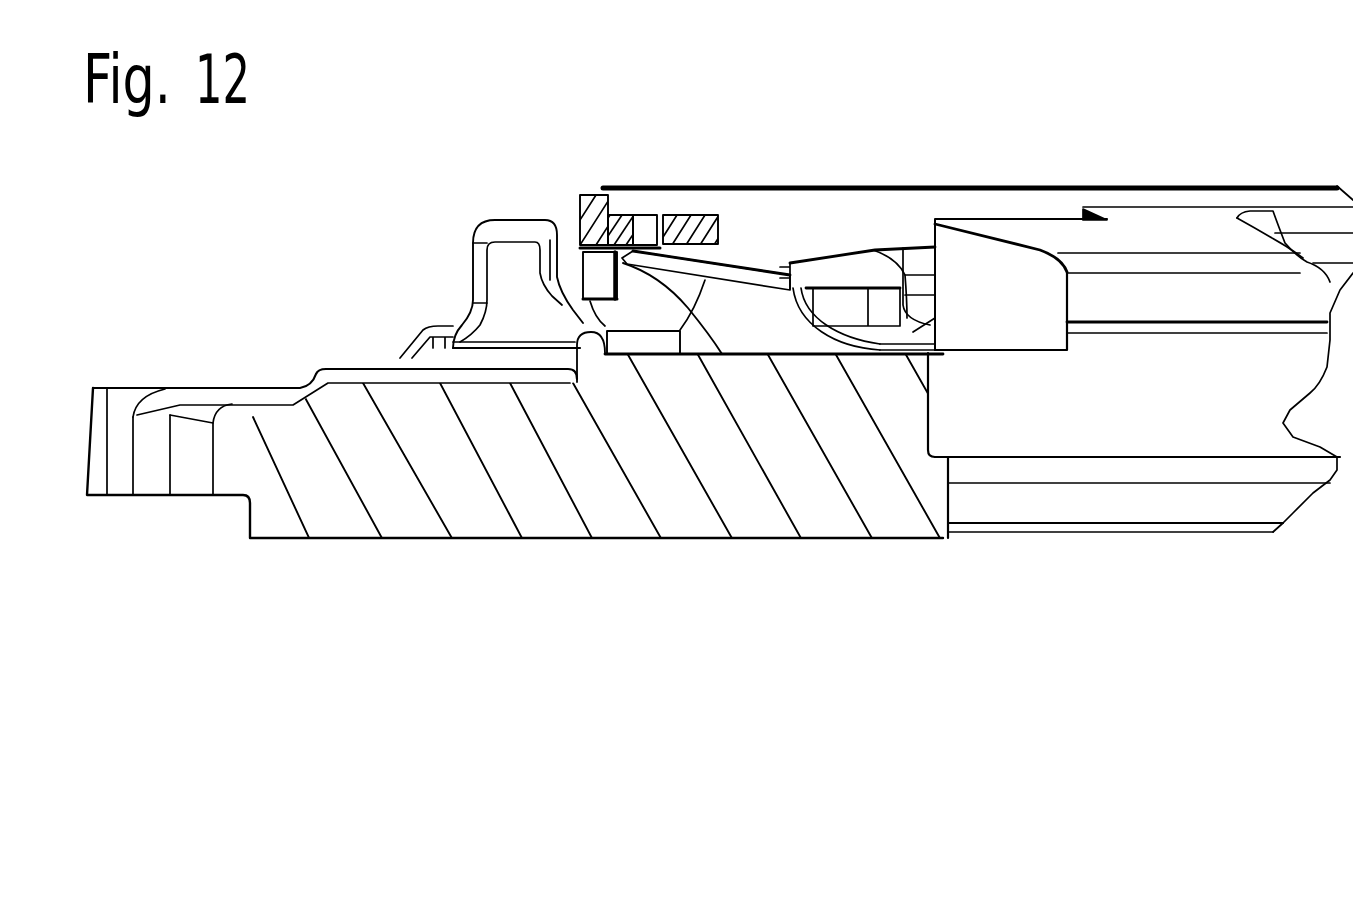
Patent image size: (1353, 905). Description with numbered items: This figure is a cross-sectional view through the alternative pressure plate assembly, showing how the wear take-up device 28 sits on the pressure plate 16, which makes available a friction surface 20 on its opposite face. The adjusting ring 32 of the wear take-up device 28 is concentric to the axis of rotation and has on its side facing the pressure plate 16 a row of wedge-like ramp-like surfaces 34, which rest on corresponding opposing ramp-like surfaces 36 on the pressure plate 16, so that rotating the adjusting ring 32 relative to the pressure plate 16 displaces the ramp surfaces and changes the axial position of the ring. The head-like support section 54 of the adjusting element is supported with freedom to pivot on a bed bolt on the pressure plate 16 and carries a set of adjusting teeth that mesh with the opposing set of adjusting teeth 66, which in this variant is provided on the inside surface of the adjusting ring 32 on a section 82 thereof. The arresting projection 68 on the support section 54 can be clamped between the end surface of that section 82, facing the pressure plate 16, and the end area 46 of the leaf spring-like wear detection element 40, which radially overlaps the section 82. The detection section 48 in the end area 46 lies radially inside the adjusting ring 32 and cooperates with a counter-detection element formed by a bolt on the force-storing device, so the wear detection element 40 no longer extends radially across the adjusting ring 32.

The pressure plate 16 is at (1070, 433).
The friction surface 20 is at (348, 541).
The wear take-up device 28 is at (568, 203).
The adjusting ring 32 is at (1003, 205).
The ramp-like surfaces 34 is at (875, 265).
The opposing ramp-like surfaces 36 is at (876, 250).
The wear detection element 40 is at (812, 338).
The end area 46 is at (680, 290).
The detection section 48 is at (707, 270).
The support section 54 is at (718, 215).
The opposing set of adjusting teeth 66 is at (658, 218).
The arresting projection 68 is at (600, 290).
The section 82 is at (622, 218).